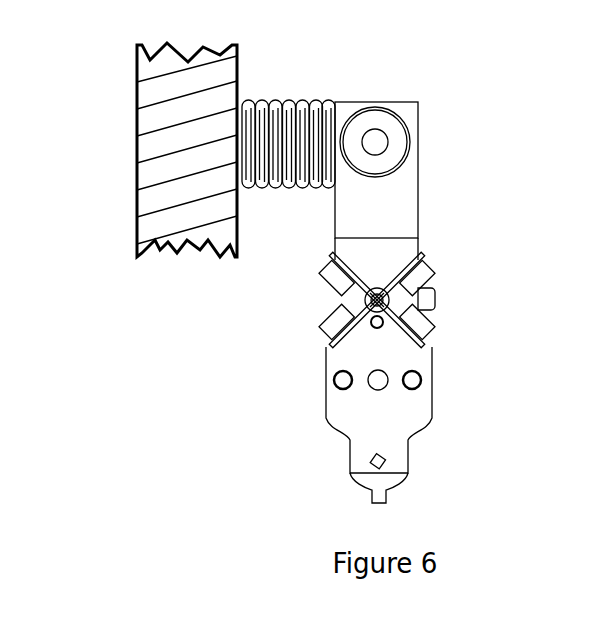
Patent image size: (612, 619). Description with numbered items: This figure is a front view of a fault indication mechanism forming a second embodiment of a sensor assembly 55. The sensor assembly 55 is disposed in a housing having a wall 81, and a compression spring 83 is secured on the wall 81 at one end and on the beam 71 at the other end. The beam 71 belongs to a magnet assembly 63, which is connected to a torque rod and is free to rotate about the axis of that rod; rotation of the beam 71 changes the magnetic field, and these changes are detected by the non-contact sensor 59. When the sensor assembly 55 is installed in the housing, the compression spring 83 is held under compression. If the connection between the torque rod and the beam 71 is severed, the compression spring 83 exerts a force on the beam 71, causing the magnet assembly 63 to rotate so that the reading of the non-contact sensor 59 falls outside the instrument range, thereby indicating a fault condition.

The sensor assembly 55 is at (274, 43).
The non-contact sensor 59 is at (410, 138).
The magnet assembly 63 is at (433, 155).
The beam 71 is at (418, 202).
The wall 81 is at (137, 93).
The compression spring 83 is at (307, 103).